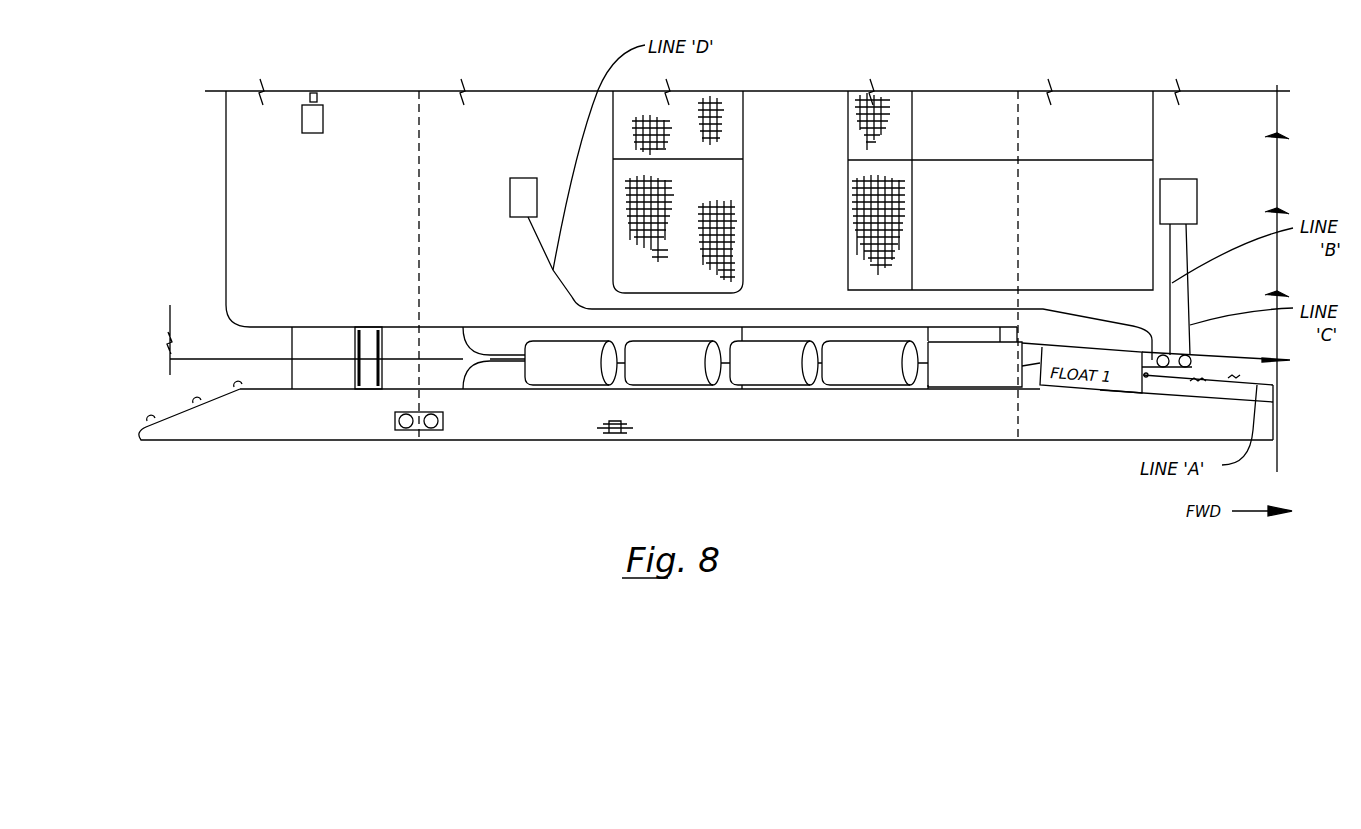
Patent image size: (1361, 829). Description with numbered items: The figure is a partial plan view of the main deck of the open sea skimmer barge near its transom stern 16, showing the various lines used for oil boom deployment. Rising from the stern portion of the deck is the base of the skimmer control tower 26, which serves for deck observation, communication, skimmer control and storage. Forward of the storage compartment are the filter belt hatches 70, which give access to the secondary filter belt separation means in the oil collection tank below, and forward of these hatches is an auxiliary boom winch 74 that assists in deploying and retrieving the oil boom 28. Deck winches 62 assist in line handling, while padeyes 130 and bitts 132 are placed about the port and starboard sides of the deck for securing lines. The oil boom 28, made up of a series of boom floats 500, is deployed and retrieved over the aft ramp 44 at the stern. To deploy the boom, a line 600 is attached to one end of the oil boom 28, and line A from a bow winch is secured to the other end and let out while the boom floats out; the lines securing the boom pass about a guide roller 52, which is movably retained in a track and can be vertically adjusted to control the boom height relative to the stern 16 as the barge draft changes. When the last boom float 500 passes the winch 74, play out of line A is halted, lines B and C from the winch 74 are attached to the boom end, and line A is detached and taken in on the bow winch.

The transom stern 16 is at (226, 180).
The skimmer control tower 26 is at (803, 118).
The oil boom 28 is at (852, 373).
The aft ramp 44 is at (509, 379).
The guide roller 52 is at (375, 372).
The winch 62 is at (318, 113).
The filter belt hatch 70 is at (975, 180).
The auxiliary boom winch 74 is at (1180, 190).
The padeye 130 is at (610, 433).
The bitt 132 is at (425, 430).
The boom float 500 is at (665, 372).
The line 600 is at (217, 358).